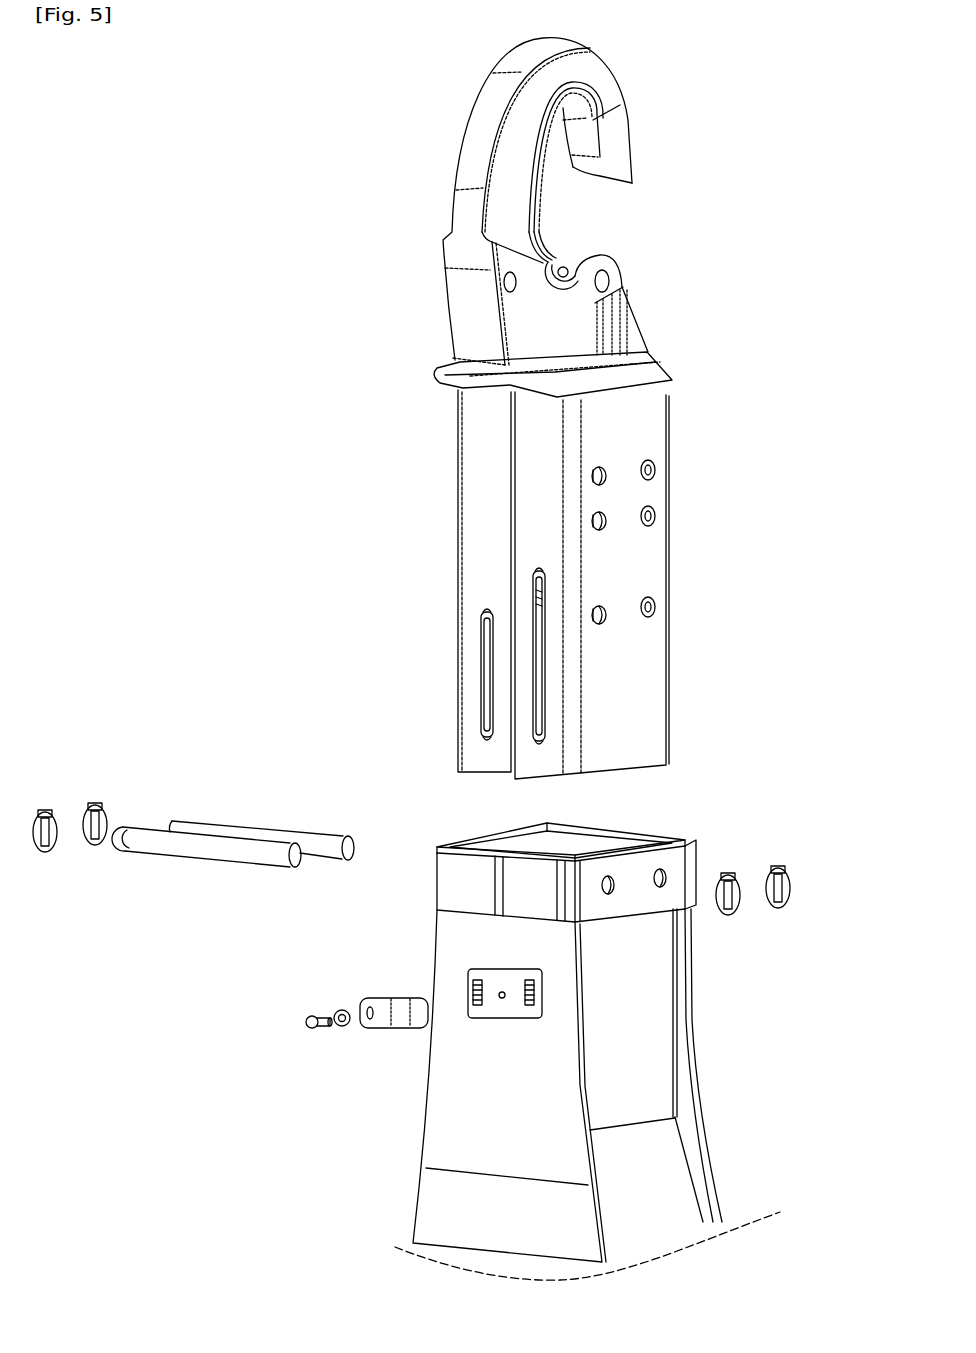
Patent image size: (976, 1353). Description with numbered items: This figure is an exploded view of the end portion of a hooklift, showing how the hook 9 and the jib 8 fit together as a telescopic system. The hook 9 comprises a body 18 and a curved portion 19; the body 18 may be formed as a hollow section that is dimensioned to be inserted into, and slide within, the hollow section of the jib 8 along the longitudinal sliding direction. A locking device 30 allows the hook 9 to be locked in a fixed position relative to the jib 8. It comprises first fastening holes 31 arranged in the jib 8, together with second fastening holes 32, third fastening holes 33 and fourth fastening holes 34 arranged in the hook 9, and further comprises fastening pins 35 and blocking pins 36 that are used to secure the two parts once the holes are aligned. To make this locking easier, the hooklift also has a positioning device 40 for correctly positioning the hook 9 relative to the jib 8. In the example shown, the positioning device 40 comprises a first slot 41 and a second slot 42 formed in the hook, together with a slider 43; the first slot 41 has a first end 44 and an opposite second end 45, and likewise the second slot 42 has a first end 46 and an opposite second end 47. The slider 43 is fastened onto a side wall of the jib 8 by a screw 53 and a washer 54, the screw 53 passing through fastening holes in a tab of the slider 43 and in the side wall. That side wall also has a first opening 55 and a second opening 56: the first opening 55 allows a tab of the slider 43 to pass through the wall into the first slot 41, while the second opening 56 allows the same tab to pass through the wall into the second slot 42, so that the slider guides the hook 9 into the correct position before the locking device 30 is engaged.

The jib 8 is at (392, 1192).
The hook 9 is at (424, 217).
The body 18 is at (752, 365).
The curved portion 19 is at (752, 37).
The locking device 30 is at (126, 905).
The first fastening holes 31 is at (625, 888).
The second fastening holes 32 is at (612, 615).
The third fastening holes 33 is at (612, 521).
The fourth fastening holes 34 is at (612, 476).
The fastening pins 35 is at (217, 826).
The blocking pins 36 is at (48, 800).
The positioning device 40 is at (392, 692).
The first slot 41 is at (481, 665).
The second slot 42 is at (533, 697).
The slider 43 is at (398, 1035).
The first end 44 is at (487, 737).
The second end 45 is at (487, 612).
The first end 46 is at (539, 742).
The second end 47 is at (539, 573).
The screw 53 is at (302, 1028).
The washer 54 is at (344, 1002).
The first opening 55 is at (472, 993).
The second opening 56 is at (517, 1000).